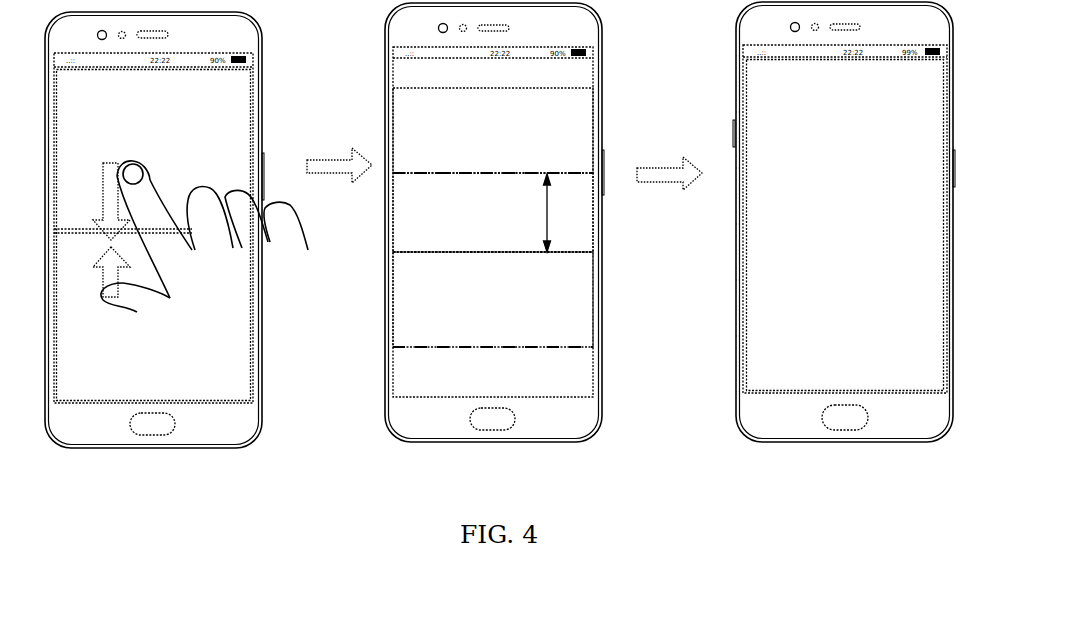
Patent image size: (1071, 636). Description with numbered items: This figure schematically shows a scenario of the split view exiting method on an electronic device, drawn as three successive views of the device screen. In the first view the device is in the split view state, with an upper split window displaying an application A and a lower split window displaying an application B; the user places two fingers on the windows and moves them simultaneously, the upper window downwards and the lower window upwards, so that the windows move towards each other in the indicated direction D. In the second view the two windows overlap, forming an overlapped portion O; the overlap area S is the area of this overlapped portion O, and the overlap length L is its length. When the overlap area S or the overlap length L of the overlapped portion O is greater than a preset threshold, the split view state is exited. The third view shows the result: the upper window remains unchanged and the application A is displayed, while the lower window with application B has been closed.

The application A is at (504, 155).
The application B is at (493, 299).
The sliding direction of touch operation D is at (133, 249).
The overlap area S is at (493, 212).
The overlap length L is at (538, 213).
The overlapped portion O is at (572, 217).